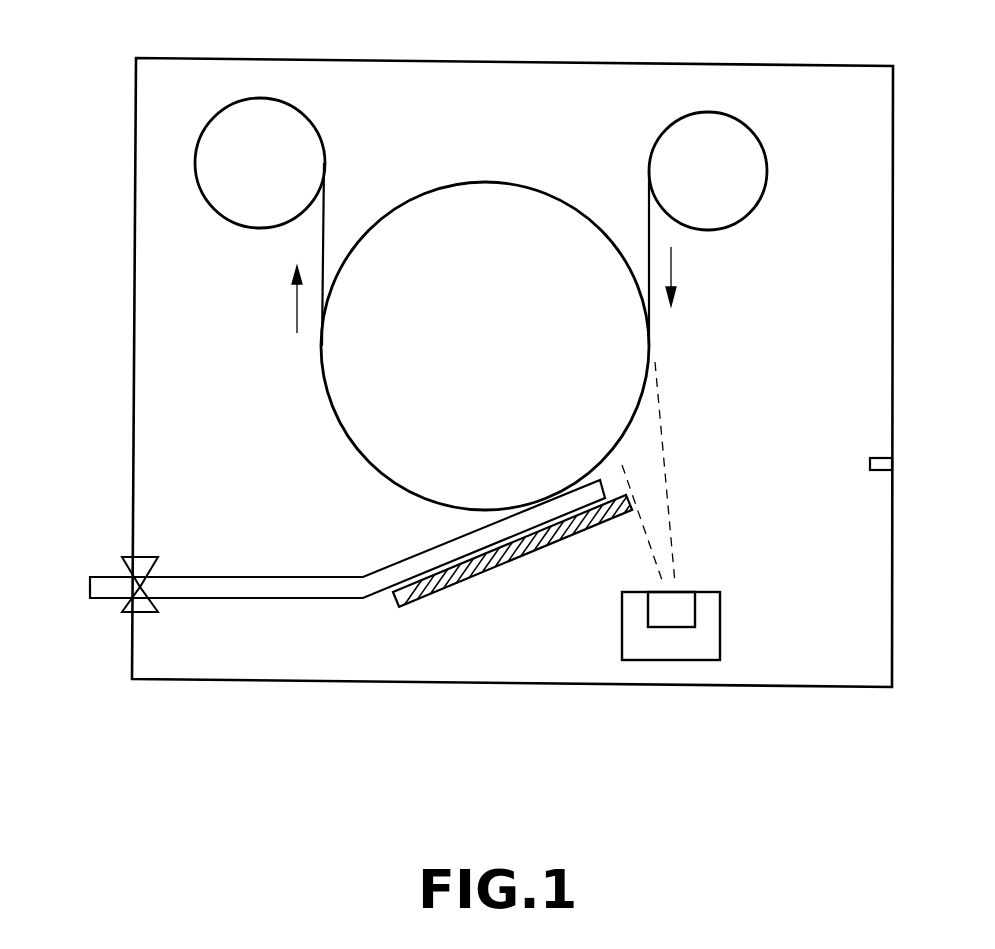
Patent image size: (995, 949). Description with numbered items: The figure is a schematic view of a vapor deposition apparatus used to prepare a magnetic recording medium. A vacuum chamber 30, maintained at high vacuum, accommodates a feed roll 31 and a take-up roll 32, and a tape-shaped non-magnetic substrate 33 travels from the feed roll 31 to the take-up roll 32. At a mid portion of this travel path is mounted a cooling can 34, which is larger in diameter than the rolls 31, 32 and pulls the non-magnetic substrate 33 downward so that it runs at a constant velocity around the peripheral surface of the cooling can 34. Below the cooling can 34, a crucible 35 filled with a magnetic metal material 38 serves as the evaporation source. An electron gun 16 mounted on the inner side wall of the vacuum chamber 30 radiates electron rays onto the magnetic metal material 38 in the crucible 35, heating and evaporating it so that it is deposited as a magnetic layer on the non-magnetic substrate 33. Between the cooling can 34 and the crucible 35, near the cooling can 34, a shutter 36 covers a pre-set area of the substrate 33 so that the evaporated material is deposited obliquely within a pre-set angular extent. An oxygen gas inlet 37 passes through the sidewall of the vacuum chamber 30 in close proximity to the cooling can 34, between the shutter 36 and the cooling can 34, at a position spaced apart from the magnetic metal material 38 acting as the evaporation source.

The vacuum chamber 30 is at (627, 65).
The feed roll 31 is at (747, 158).
The take-up roll 32 is at (227, 197).
The non-magnetic substrate 33 is at (321, 233).
The cooling can 34 is at (383, 457).
The crucible 35 is at (705, 635).
The shutter 36 is at (432, 590).
The oxygen gas inlet 37 is at (395, 574).
The magnetic metal material 38 is at (687, 590).
The electron gun 16 is at (882, 458).